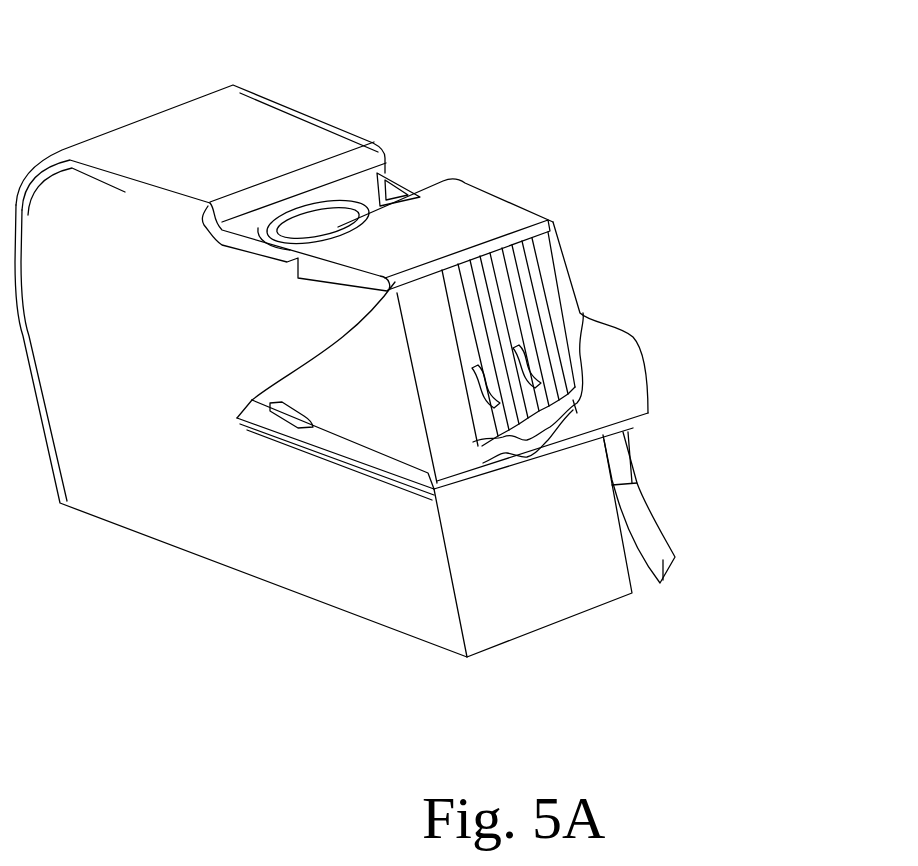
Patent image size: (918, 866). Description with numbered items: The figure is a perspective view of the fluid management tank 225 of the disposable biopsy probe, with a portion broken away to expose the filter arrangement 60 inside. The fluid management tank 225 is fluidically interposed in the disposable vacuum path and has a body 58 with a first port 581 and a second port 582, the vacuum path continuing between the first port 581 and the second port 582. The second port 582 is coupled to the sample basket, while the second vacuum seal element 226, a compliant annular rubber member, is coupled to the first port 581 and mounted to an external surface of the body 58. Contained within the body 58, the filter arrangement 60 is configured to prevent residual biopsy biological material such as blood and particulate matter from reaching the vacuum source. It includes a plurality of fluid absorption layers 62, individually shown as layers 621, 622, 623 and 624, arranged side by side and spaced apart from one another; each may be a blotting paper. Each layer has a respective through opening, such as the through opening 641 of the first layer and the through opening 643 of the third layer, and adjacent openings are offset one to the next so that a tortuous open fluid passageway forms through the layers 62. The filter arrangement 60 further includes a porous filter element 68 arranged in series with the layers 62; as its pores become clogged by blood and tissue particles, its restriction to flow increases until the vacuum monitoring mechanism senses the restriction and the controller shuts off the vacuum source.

The fluid management tank 225 is at (483, 141).
The second vacuum seal element 226 is at (316, 205).
The first port 581 is at (252, 249).
The body 58 is at (478, 186).
The filter arrangement 60 is at (556, 267).
The fluid absorption layer 621 is at (475, 317).
The fluid absorption layer 622 is at (500, 330).
The fluid absorption layer 623 is at (523, 340).
The fluid absorption layer 624 is at (550, 360).
The through opening 641 is at (470, 388).
The through opening 643 is at (540, 363).
The plurality of fluid absorption layers 62 is at (548, 447).
The porous filter element 68 is at (363, 407).
The second port 582 is at (640, 433).